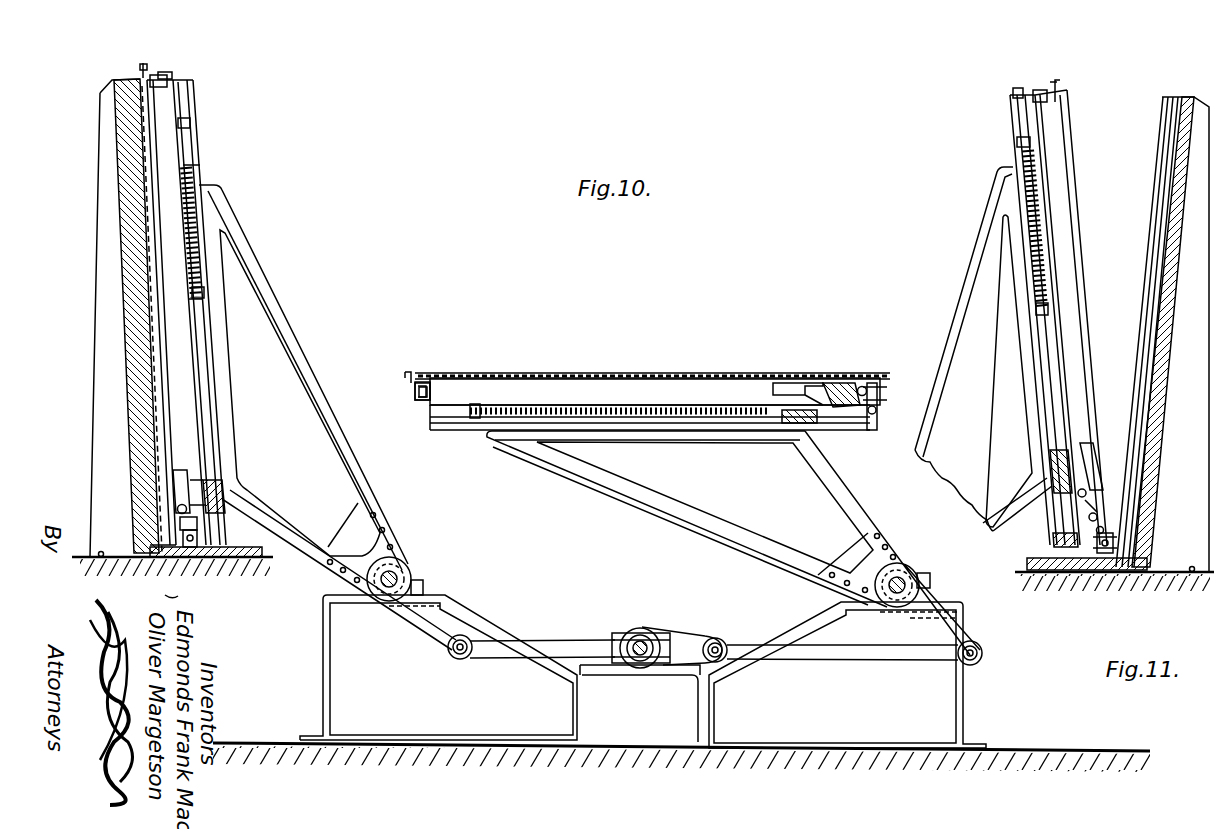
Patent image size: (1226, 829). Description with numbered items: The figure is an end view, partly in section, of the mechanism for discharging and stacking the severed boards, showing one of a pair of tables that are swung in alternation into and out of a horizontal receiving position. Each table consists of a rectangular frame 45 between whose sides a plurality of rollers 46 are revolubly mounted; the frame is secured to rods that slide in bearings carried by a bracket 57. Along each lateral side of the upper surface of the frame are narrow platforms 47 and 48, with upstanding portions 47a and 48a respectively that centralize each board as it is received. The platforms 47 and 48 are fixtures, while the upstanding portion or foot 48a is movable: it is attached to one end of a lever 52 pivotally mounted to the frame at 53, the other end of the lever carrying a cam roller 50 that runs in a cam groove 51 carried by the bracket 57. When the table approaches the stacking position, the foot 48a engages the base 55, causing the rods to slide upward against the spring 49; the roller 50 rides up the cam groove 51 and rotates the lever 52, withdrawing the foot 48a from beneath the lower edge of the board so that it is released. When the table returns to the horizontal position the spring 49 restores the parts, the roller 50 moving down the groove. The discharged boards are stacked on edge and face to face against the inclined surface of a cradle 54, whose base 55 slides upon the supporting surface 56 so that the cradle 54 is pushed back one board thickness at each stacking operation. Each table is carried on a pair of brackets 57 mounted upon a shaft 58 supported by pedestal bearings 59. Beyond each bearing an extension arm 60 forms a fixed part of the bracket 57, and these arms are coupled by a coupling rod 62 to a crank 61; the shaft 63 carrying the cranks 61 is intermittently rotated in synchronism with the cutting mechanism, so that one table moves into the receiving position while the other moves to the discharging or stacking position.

In FIG. 10, the rectangular frame 45 is at (187, 101).
In FIG. 11, the rectangular frame 45 is at (1015, 118).
In FIG. 10, the rollers 46 is at (160, 139).
In FIG. 11, the rollers 46 is at (1053, 186).
In FIG. 10, the platform 47 is at (149, 78).
In FIG. 11, the platform 47 is at (1060, 84).
In FIG. 10, the upstanding portion 47a is at (144, 63).
In FIG. 11, the upstanding portion 47a is at (1056, 79).
In FIG. 10, the platform 48 is at (183, 534).
In FIG. 11, the platform 48 is at (1113, 551).
In FIG. 10, the upstanding portion 48a is at (197, 548).
In FIG. 11, the upstanding portion 48a is at (1107, 555).
In FIG. 10, the spring 49 is at (203, 220).
In FIG. 11, the spring 49 is at (1047, 242).
In FIG. 10, the cam roller 50 is at (188, 478).
In FIG. 11, the cam roller 50 is at (1088, 493).
In FIG. 10, the cam groove 51 is at (181, 472).
In FIG. 11, the cam groove 51 is at (1090, 433).
In FIG. 10, the lever 52 is at (180, 520).
In FIG. 11, the lever 52 is at (1098, 512).
In FIG. 10, the pivot 53 is at (178, 510).
In FIG. 11, the pivot 53 is at (1104, 531).
In FIG. 10, the cradle 54 is at (124, 276).
In FIG. 11, the cradle 54 is at (1177, 300).
In FIG. 10, the base 55 is at (253, 558).
In FIG. 11, the base 55 is at (1057, 571).
In FIG. 10, the supporting surface 56 is at (101, 558).
In FIG. 11, the supporting surface 56 is at (1192, 573).
In FIG. 10, the bracket 57 is at (350, 464).
In FIG. 11, the bracket 57 is at (980, 262).
In FIG. 10, the shaft 58 is at (408, 562).
In FIG. 10, the pedestal bearing 59 is at (421, 575).
In FIG. 10, the extension arm 60 is at (400, 608).
In FIG. 10, the crank 61 is at (690, 638).
In FIG. 10, the coupling rod 62 is at (510, 652).
In FIG. 10, the shaft 63 is at (634, 630).